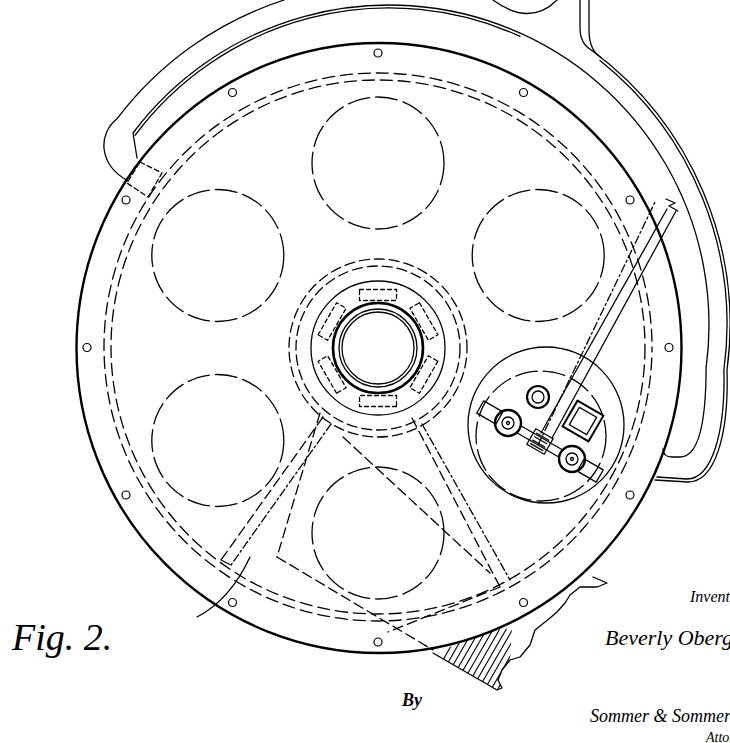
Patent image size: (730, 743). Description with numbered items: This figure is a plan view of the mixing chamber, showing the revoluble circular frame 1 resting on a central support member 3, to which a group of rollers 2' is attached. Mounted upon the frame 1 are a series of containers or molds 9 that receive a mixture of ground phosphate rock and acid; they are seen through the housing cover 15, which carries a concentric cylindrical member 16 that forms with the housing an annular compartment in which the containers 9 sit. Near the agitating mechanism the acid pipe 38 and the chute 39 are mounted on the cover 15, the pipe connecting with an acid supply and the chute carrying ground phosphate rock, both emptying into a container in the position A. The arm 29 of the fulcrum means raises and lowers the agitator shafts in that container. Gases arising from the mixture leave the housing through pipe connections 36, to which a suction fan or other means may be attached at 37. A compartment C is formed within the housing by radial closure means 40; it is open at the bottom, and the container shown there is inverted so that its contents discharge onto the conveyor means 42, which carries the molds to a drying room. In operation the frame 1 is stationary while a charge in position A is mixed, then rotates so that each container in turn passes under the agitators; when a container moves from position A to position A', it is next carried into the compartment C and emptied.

The circular frame 1 is at (75, 320).
The rollers 2' is at (400, 348).
The central support member 3 is at (135, 203).
The containers or molds 9 is at (150, 258).
The cover 15 is at (497, 410).
The concentric cylindrical member 16 is at (297, 343).
The arm 29 is at (598, 332).
The pipe connections 36 is at (117, 118).
The suction fan attachment point 37 is at (594, 14).
The acid pipe 38 is at (540, 378).
The chute 39 is at (592, 401).
The radial closure means 40 is at (180, 550).
The conveyor means 42 is at (455, 665).
The position A is at (557, 449).
The position A' is at (354, 347).
The compartment C is at (223, 605).